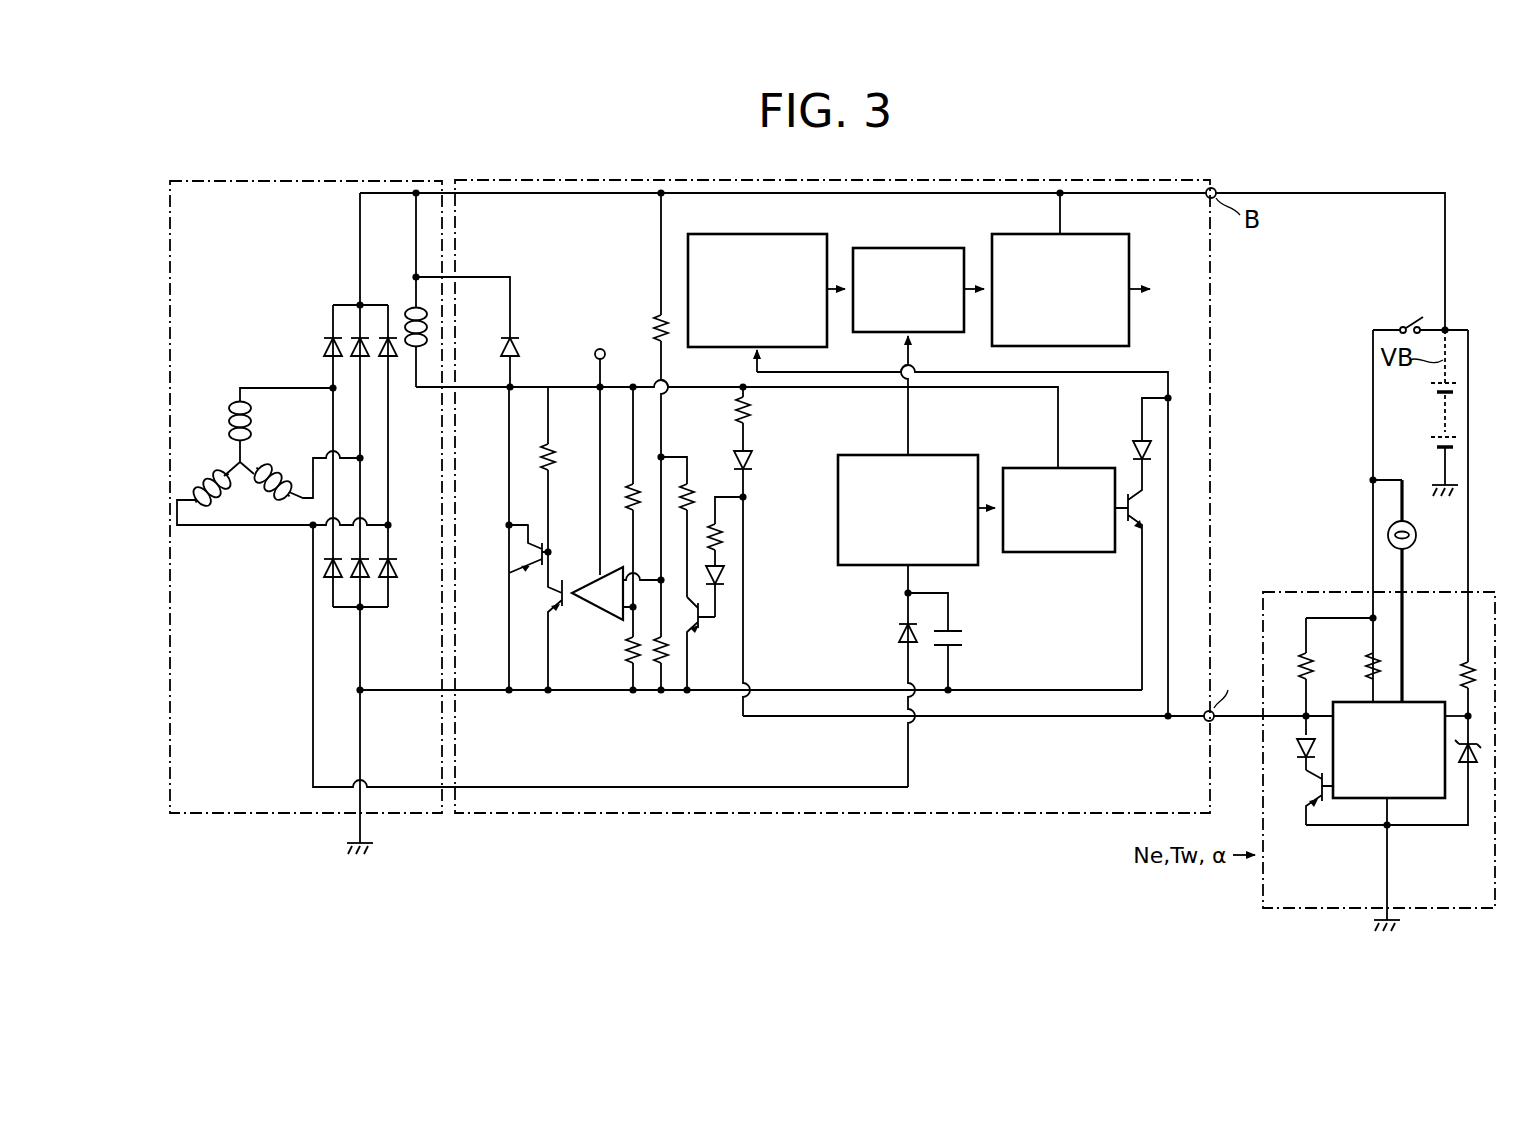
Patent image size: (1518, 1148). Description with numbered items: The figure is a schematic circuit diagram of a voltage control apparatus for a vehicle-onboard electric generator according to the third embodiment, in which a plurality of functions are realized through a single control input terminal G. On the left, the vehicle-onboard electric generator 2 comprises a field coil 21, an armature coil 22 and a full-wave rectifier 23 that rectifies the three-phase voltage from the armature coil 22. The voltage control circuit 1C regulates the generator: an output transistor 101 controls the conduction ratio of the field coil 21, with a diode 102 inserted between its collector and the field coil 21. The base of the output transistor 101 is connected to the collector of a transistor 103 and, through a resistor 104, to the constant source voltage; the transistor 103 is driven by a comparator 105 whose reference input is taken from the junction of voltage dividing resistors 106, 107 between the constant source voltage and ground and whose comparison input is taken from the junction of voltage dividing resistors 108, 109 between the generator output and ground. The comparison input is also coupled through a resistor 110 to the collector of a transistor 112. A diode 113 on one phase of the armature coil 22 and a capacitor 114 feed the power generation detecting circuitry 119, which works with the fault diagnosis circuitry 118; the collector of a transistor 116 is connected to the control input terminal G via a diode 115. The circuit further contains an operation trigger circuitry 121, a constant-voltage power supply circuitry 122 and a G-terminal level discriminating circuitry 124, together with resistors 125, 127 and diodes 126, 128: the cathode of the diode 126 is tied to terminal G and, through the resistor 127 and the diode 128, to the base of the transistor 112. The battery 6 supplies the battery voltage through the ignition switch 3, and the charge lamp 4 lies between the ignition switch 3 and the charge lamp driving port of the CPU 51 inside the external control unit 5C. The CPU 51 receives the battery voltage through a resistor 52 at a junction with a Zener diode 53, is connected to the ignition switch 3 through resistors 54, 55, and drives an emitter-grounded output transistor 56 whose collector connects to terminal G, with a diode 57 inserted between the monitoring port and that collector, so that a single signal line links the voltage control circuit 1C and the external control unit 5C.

The vehicle-onboard electric generator 2 is at (539, 526).
The field coil 21 is at (410, 320).
The armature coil 22 is at (232, 418).
The full-wave rectifier 23 is at (353, 387).
The voltage control circuit 1C is at (902, 524).
The output transistor 101 is at (538, 548).
The diode 102 is at (518, 340).
The transistor 103 is at (562, 608).
The resistor 104 is at (548, 445).
The comparator 105 is at (590, 606).
The voltage dividing resistor 106 is at (640, 478).
The voltage dividing resistor 107 is at (628, 692).
The voltage dividing resistor 108 is at (655, 320).
The voltage dividing resistor 109 is at (656, 692).
The resistor 110 is at (690, 483).
The transistor 112 is at (700, 692).
The diode 113 is at (895, 634).
The capacitor 114 is at (968, 641).
The diode 115 is at (1135, 442).
The transistor 116 is at (1128, 522).
The fault diagnosis circuitry 118 is at (1085, 468).
The power generation detecting circuitry 119 is at (946, 455).
The operation trigger circuitry 121 is at (906, 248).
The constant-voltage power supply circuitry 122 is at (1075, 233).
The G-terminal level discriminating circuitry 124 is at (717, 233).
The resistor 125 is at (752, 410).
The diode 126 is at (752, 452).
The resistor 127 is at (718, 528).
The diode 128 is at (722, 572).
The ignition switch 3 is at (1410, 322).
The charge lamp 4 is at (1418, 537).
The external control unit 5C is at (1348, 761).
The battery 6 is at (1440, 425).
The CPU 51 is at (1418, 702).
The resistor 52 is at (1465, 662).
The Zener diode 53 is at (1470, 775).
The resistor 54 is at (1370, 662).
The resistor 55 is at (1302, 655).
The output transistor 56 is at (1316, 790).
The diode 57 is at (1312, 738).